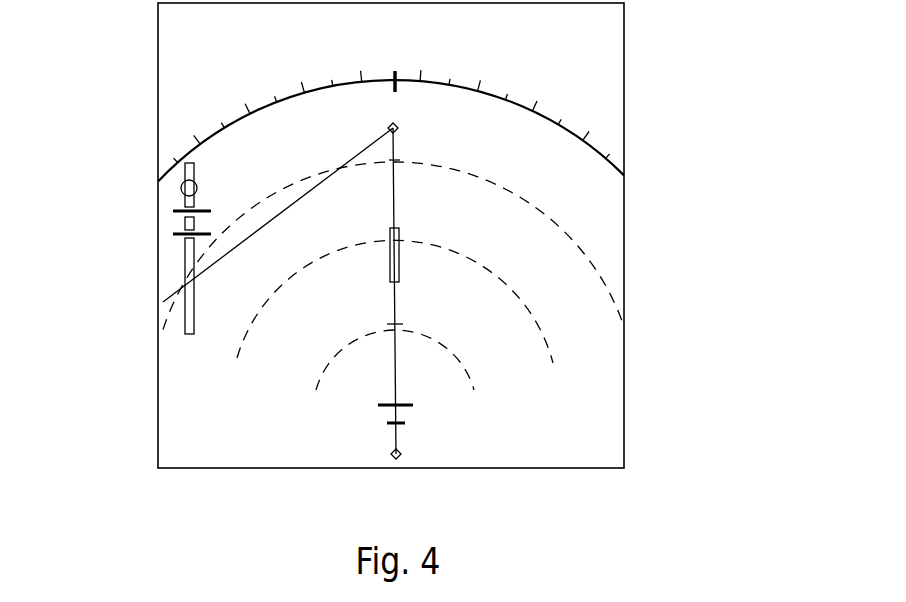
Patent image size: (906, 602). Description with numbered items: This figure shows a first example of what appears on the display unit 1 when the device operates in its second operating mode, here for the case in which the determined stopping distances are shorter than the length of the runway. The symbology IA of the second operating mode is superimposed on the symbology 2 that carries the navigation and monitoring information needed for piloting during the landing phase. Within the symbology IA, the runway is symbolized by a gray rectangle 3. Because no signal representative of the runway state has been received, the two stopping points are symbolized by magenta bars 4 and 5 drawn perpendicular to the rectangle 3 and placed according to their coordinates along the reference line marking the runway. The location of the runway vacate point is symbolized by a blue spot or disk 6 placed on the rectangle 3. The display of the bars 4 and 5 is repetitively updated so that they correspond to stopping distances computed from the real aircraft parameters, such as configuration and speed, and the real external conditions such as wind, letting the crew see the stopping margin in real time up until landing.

The display unit 1 is at (688, 159).
The symbology 2 is at (550, 288).
The rectangle 3 is at (185, 330).
The bar 4 is at (176, 237).
The bar 5 is at (175, 209).
The disk 6 is at (181, 188).
The symbology of the second operating mode IA is at (148, 282).